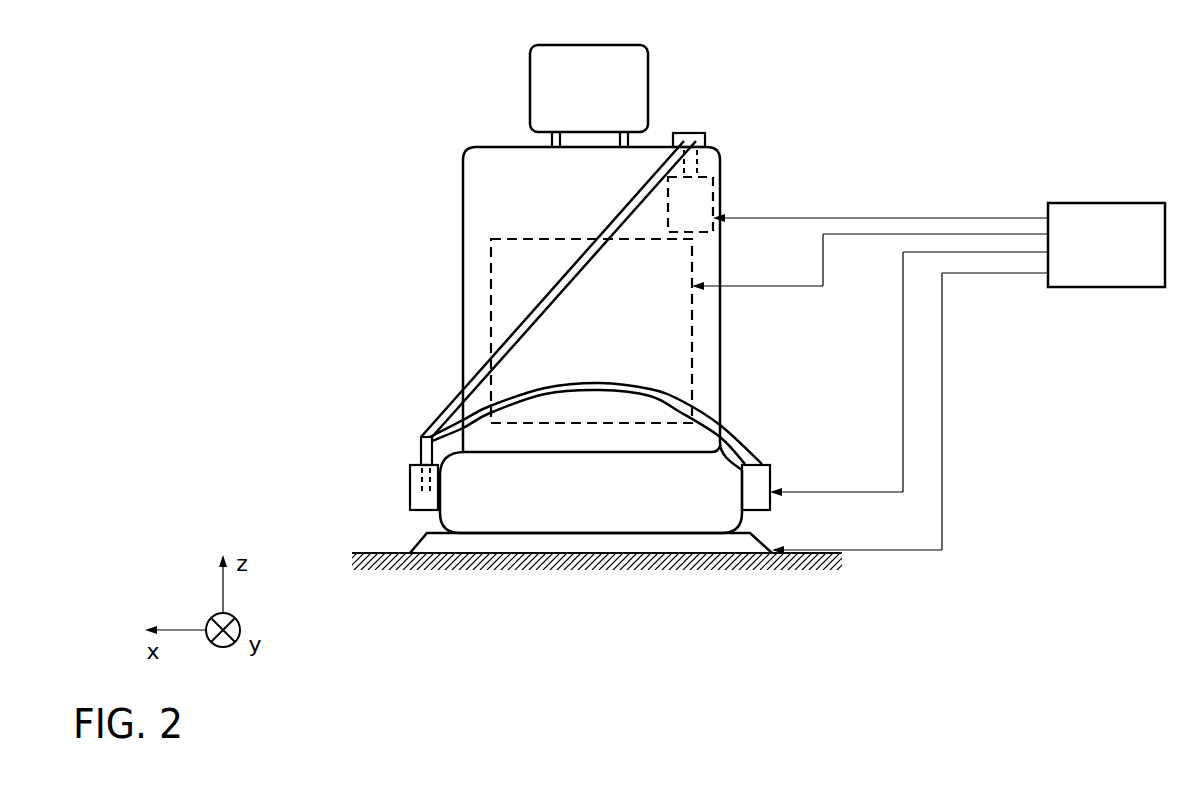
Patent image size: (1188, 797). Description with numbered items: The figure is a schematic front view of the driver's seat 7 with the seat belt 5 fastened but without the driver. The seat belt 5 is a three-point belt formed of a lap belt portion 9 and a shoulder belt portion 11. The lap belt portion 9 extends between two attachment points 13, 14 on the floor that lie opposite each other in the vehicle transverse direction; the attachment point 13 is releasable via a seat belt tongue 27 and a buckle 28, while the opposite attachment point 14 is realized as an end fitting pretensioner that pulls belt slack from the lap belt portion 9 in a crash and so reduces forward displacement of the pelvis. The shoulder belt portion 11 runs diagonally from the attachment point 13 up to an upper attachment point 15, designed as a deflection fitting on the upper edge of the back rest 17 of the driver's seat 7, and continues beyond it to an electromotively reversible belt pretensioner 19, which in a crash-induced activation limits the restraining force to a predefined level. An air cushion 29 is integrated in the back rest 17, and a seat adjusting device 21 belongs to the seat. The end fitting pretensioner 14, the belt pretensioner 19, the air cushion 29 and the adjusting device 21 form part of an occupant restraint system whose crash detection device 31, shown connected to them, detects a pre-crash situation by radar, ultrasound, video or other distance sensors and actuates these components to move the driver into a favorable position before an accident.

The seat belt 5 is at (378, 313).
The driver's seat 7 is at (462, 232).
The lap belt portion 9 is at (545, 390).
The shoulder belt portion 11 is at (519, 335).
The attachment point 13 is at (318, 423).
The attachment point 14 is at (765, 465).
The upper attachment point 15 is at (698, 130).
The back rest 17 is at (769, 328).
The electromotively reversible belt pretensioner 19 is at (702, 201).
The seat adjusting device 21 is at (687, 545).
The seat belt tongue 27 is at (425, 451).
The buckle 28 is at (410, 500).
The air cushion 29 is at (692, 358).
The crash detection device 31 is at (968, 378).